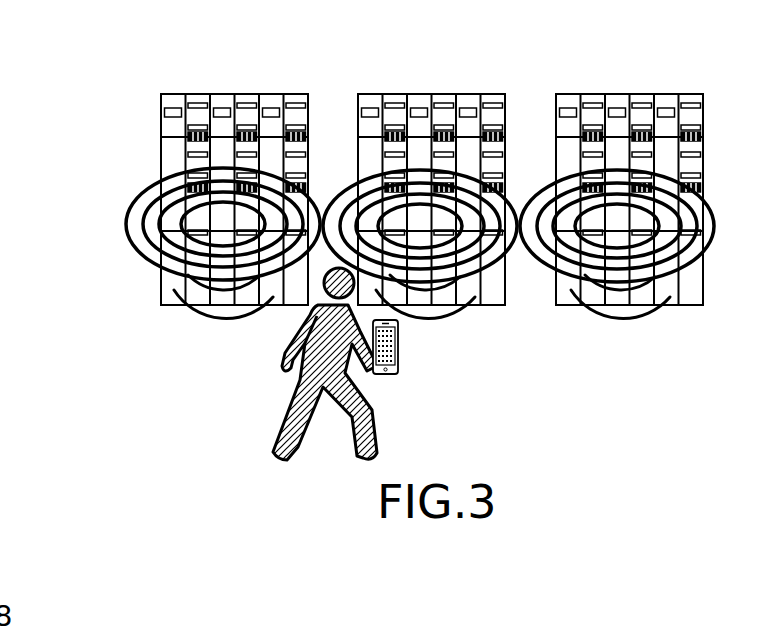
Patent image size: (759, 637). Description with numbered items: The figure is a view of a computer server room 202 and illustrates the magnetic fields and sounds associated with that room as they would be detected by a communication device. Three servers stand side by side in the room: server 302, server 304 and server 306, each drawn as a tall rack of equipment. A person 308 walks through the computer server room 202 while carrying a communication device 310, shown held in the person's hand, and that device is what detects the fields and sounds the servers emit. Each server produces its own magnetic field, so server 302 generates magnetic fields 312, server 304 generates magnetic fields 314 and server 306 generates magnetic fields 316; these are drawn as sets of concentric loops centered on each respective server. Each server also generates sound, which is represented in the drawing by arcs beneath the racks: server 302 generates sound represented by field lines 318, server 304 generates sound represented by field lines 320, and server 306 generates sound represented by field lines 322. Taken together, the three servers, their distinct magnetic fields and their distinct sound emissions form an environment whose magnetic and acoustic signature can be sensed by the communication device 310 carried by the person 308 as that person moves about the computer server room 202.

The computer server room 202 is at (173, 53).
The server 302 is at (270, 93).
The server 304 is at (467, 95).
The server 306 is at (663, 95).
The person 308 is at (287, 370).
The communication device 310 is at (387, 376).
The magnetic fields 312 is at (135, 223).
The magnetic fields 314 is at (519, 250).
The magnetic fields 316 is at (714, 198).
The field lines 318 is at (217, 297).
The field lines 320 is at (430, 315).
The field lines 322 is at (622, 315).